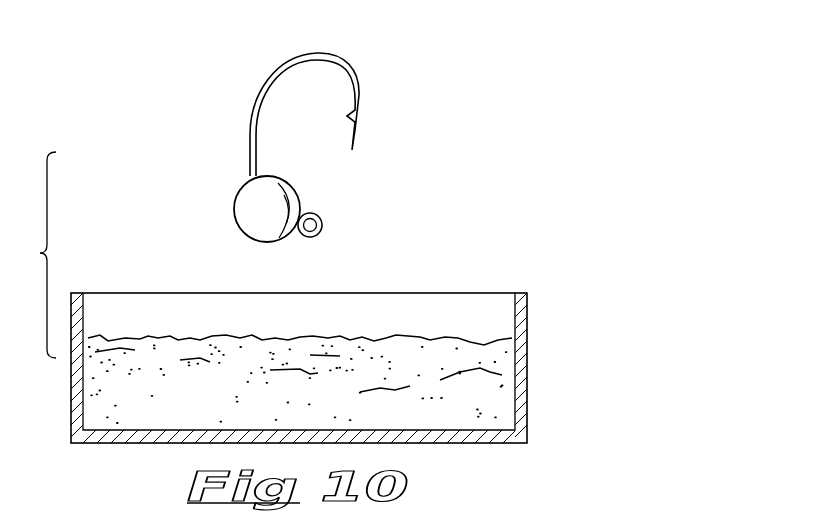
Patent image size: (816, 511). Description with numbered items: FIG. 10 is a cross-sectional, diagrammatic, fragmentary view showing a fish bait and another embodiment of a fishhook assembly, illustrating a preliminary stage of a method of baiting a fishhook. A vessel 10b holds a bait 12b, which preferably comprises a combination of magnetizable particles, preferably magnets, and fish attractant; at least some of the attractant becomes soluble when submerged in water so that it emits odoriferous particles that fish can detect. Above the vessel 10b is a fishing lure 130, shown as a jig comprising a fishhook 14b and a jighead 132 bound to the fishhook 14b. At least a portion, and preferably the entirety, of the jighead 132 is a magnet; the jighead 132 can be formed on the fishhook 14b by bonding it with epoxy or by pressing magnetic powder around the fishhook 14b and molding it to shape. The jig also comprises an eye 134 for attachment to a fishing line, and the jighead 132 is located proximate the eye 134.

The fishhook 14b is at (243, 91).
The fishing lure 130 is at (398, 135).
The jighead 132 is at (253, 218).
The eye 134 is at (329, 229).
The bait 12b is at (417, 375).
The vessel 10b is at (549, 336).